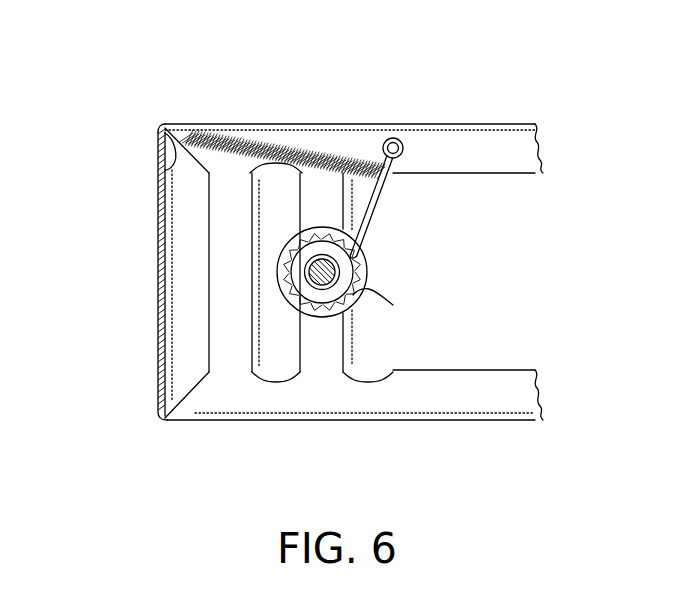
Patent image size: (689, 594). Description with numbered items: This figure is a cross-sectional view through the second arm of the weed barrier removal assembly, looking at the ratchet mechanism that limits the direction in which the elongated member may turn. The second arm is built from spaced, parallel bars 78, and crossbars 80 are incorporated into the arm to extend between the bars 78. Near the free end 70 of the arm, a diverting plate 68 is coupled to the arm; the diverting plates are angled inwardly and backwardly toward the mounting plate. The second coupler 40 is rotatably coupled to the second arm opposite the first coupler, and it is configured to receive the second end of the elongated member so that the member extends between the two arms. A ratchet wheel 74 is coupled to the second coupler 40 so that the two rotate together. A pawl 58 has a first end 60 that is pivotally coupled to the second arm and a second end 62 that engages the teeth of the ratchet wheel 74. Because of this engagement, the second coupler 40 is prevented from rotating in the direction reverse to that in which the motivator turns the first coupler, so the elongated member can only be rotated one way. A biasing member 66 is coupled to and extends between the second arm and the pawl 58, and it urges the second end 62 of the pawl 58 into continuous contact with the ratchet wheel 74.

The second coupler 40 is at (258, 253).
The pawl 58 is at (366, 208).
The first end 60 is at (392, 138).
The second end 62 is at (362, 250).
The biasing member 66 is at (274, 140).
The diverting plate 68 is at (158, 315).
The free end 70 is at (165, 129).
The ratchet wheel 74 is at (355, 297).
The bars 78 is at (458, 135).
The crossbars 80 is at (270, 335).